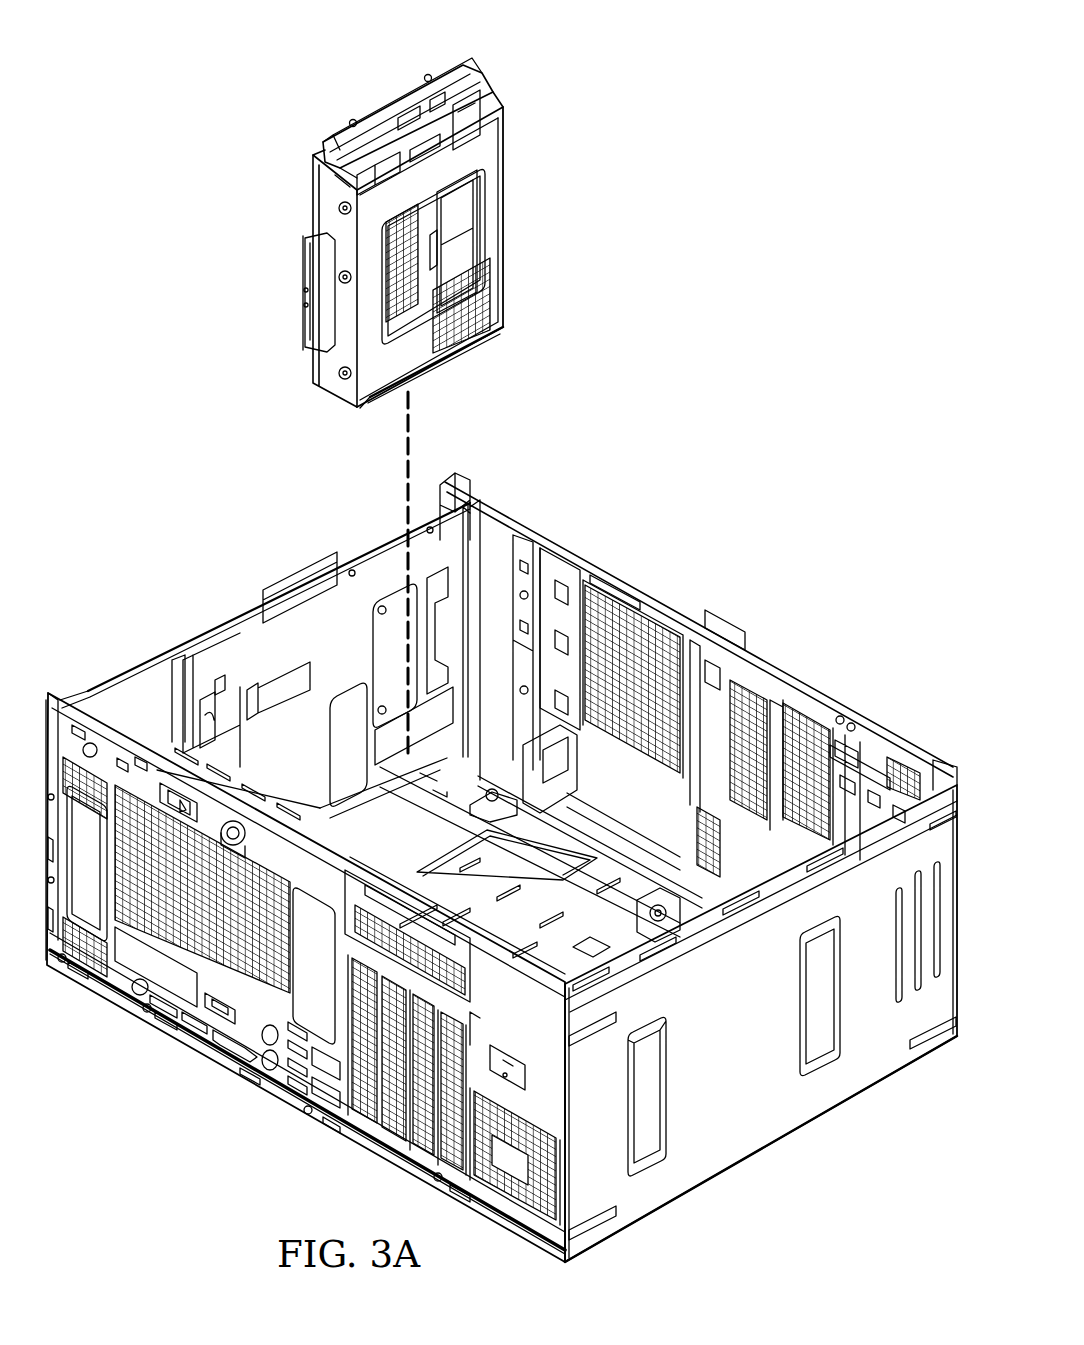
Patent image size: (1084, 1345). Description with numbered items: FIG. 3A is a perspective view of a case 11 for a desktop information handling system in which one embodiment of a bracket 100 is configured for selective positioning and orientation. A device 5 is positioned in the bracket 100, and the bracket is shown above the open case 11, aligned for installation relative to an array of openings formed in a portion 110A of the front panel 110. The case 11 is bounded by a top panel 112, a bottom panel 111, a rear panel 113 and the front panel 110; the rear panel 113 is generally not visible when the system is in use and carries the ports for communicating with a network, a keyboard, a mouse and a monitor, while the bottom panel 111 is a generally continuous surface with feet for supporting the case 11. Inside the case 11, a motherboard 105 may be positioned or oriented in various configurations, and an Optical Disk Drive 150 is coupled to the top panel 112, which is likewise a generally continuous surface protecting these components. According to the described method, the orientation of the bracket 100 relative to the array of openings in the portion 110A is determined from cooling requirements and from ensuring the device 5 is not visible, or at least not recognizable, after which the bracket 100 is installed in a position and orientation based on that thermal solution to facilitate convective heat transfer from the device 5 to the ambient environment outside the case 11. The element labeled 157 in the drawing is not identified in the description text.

The device 5 is at (476, 65).
The bracket 100 is at (503, 217).
The case 11 is at (931, 1050).
The motherboard 105 is at (637, 937).
The front panel 110 is at (949, 686).
The portion of front panel 110A is at (731, 631).
The bottom panel 111 is at (775, 1168).
The top panel 112 is at (444, 404).
The rear panel 113 is at (284, 1134).
The Optical Disk Drive (ODD) 150 is at (485, 492).
The vertical plate / drive cage 157 is at (360, 563).